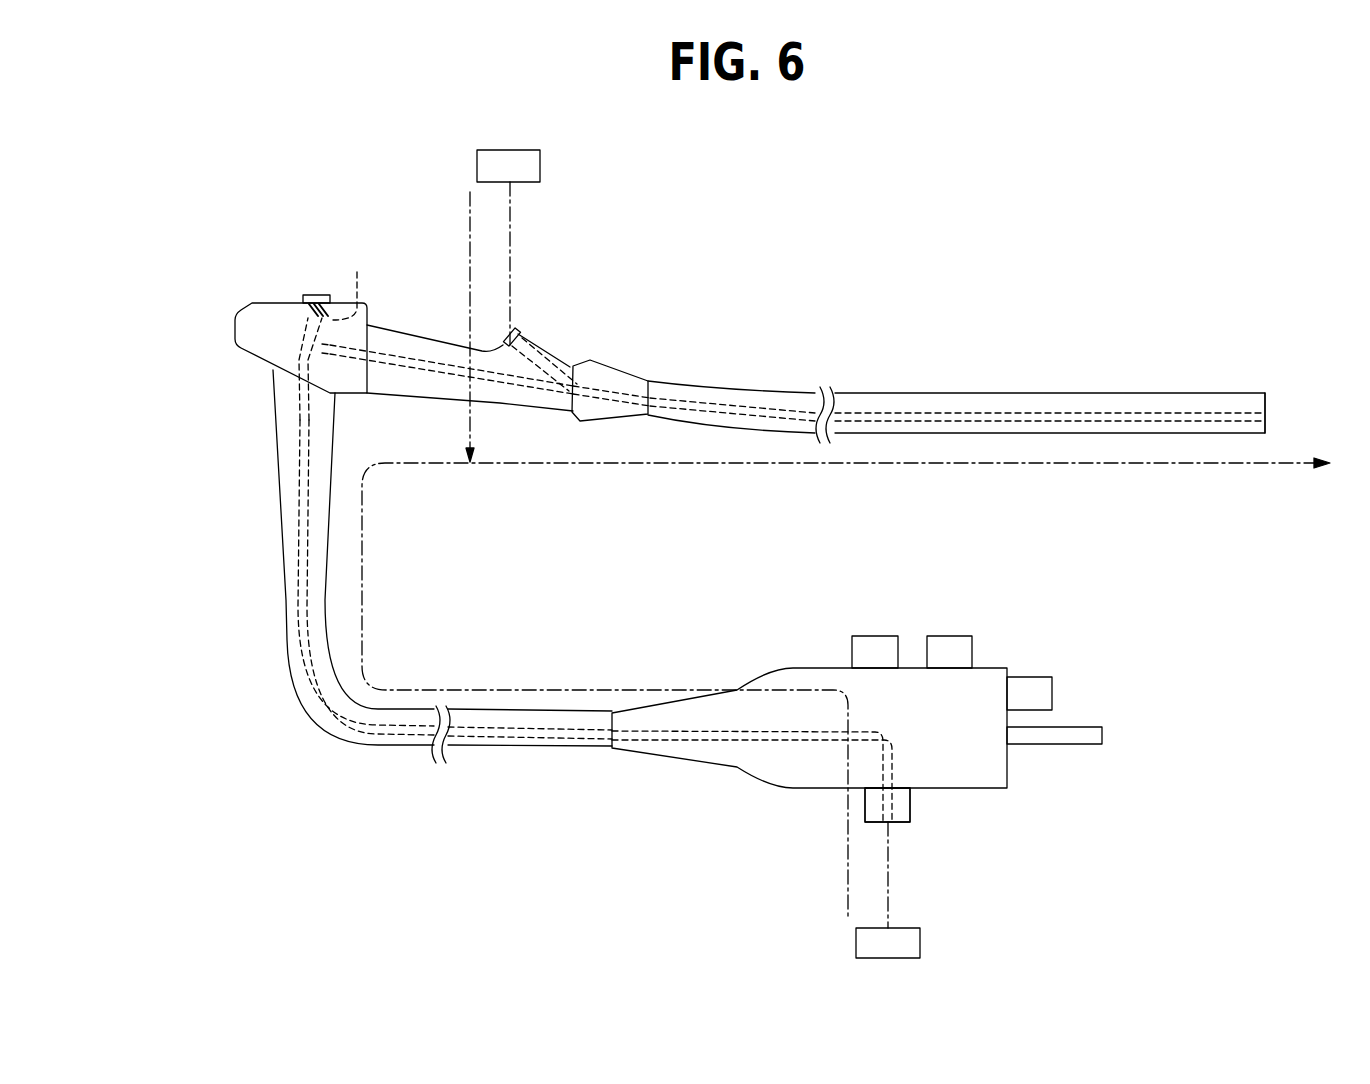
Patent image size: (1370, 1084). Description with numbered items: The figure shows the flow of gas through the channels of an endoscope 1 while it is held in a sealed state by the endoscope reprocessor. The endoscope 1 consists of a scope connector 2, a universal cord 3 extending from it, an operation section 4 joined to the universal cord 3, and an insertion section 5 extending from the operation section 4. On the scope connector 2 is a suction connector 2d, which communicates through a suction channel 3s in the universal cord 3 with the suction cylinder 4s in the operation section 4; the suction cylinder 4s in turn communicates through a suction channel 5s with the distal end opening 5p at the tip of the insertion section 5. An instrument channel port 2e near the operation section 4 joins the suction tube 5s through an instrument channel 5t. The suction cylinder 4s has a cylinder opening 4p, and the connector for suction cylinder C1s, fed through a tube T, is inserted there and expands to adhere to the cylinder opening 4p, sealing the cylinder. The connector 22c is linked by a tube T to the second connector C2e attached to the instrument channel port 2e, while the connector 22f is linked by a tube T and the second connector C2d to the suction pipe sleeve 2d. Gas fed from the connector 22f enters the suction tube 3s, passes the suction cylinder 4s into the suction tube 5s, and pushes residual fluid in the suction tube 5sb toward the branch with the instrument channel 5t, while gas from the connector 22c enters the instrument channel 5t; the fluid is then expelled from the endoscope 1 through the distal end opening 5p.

The endoscope 1 is at (1155, 260).
The scope connector 2 is at (737, 770).
The suction connector 2d is at (883, 801).
The instrument channel port 2e is at (548, 358).
The universal cord 3 is at (361, 748).
The suction channel 3s is at (293, 491).
The operation section 4 is at (236, 318).
The cylinder opening 4p is at (353, 282).
The suction cylinder 4s is at (306, 324).
The insertion section 5 is at (1041, 393).
The distal end opening 5p is at (1266, 413).
The suction channel 5s is at (875, 412).
The suction tube 5sb is at (398, 357).
The instrument channel 5t is at (560, 343).
The connector 22c is at (541, 165).
The connector 22f is at (921, 942).
The connector for suction cylinder C1s is at (316, 295).
The second connector C2e is at (521, 331).
The second connector C2d is at (911, 802).
The tube T is at (512, 240).